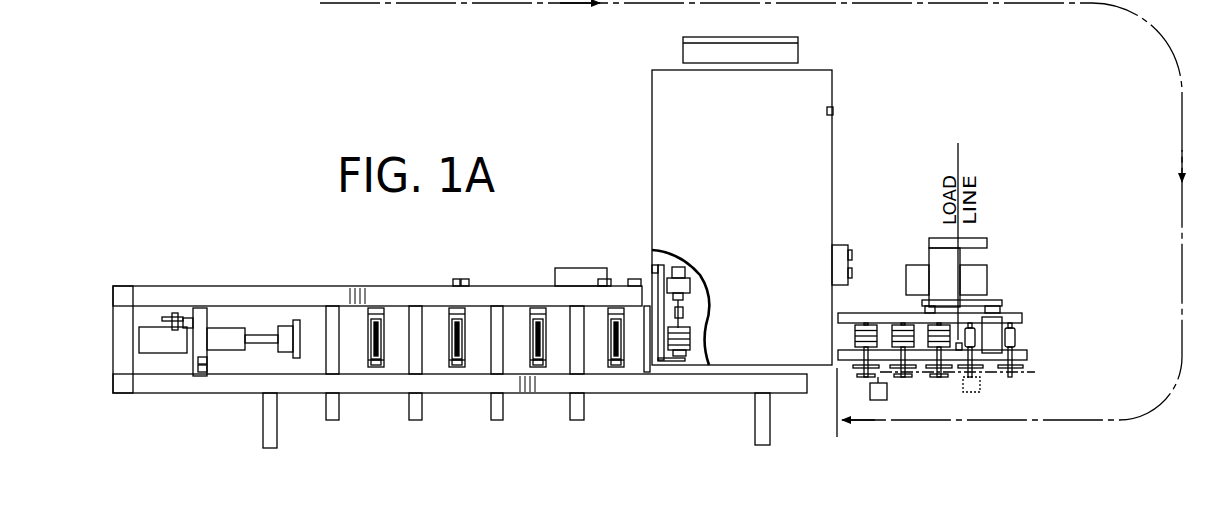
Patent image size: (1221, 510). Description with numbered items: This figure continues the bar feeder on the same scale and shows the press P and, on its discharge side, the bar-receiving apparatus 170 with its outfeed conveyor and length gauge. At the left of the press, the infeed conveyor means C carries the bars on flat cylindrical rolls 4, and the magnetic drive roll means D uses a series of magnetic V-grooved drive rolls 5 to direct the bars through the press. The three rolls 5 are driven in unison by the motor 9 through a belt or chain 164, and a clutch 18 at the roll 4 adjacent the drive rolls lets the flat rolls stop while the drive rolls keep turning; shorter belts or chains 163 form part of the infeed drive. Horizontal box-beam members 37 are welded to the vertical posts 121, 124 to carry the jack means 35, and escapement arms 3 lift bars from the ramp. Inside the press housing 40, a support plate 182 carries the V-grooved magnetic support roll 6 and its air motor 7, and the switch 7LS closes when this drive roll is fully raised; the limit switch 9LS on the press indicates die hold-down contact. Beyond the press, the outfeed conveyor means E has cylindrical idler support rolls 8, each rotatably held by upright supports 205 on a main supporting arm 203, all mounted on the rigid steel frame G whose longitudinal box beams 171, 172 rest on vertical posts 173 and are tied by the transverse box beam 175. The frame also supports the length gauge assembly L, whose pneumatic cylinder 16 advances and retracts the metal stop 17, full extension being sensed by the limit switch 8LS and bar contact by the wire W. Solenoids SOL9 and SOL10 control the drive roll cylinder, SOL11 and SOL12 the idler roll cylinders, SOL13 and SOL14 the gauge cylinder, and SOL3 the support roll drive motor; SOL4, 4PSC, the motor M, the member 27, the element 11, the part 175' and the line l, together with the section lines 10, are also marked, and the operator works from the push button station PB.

The vertical legs or posts 173 is at (123, 297).
The transverse box beam 175 is at (124, 336).
The pusher plate 175' is at (226, 299).
The limit switch 8LS is at (193, 318).
The length gauge assembly L is at (216, 324).
The metal stop 17 is at (295, 330).
The rigid steel frame G is at (336, 277).
The solenoid SOL13 is at (196, 362).
The solenoid SOL14 is at (200, 373).
The reciprocating piston pneumatic cylinder 16 is at (215, 352).
The bar-receiving apparatus 170 is at (207, 397).
The wire W is at (275, 367).
The outfeed conveyor means E is at (414, 379).
The cylindrical idler support rolls 8 is at (372, 341).
The upright supports 205 is at (450, 318).
The main supporting arm 203 is at (530, 358).
The longitudinal box beam 171 is at (562, 385).
The longitudinal box beam 172 is at (530, 290).
The escapement arms 3 is at (475, 296).
The solenoid SOL12 is at (457, 279).
The solenoid SOL11 is at (465, 279).
The solenoid SOL10 is at (603, 279).
The solenoid SOL9 is at (600, 279).
The solenoid SOL3 is at (635, 279).
The solenoid valve SOL4 is at (640, 287).
The press housing 40 is at (660, 100).
The limit switch 9LS is at (827, 111).
The press P is at (847, 100).
The switch 7LS is at (657, 262).
The support plate 182 is at (660, 352).
The air motor 7 is at (690, 285).
The V-grooved magnetic support roll 6 is at (690, 336).
The section line 10- 10 is at (668, 408).
The push button station PB is at (838, 245).
The load line l is at (962, 152).
The top plate 27 is at (970, 241).
The vertical post 124 is at (937, 253).
The jack means 35 is at (913, 277).
The horizontal box-beam member 37 is at (945, 283).
The vertical post 121 is at (943, 306).
The magnetic drive roll means D is at (876, 319).
The magnetic V-grooved drive rolls 5 is at (855, 333).
The spindle housing 11 is at (1000, 325).
The infeed conveyor means C is at (1019, 333).
The cylindrical rolls 4 is at (1017, 343).
The motor M is at (878, 388).
The motor 9 is at (882, 400).
The pressure switch 4PSC is at (958, 350).
The belt or chain 164 is at (898, 377).
The clutch 18 is at (980, 380).
The belts or chains 163 is at (1010, 372).